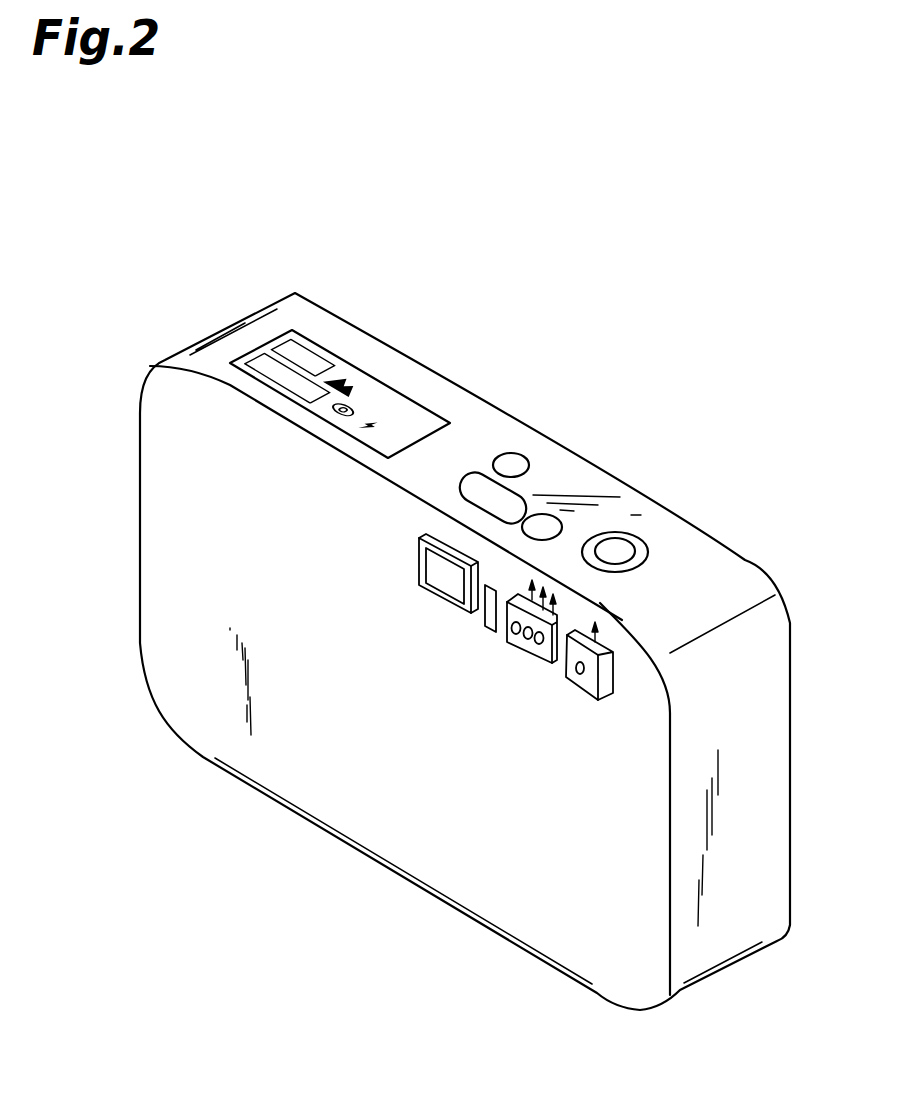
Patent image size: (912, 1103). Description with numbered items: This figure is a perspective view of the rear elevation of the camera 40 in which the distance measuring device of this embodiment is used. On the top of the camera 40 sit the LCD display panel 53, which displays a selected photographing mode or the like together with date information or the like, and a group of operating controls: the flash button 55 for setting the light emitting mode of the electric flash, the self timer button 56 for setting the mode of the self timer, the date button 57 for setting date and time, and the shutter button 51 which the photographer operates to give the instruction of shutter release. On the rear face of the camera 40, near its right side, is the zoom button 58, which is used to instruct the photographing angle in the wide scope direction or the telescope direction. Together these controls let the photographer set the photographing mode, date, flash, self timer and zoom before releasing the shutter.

The camera 40 is at (540, 408).
The shutter button 51 is at (617, 548).
The LCD display panel 53 is at (384, 386).
The flash button 55 is at (547, 520).
The self timer button 56 is at (478, 480).
The date button 57 is at (512, 454).
The zoom button 58 is at (575, 626).